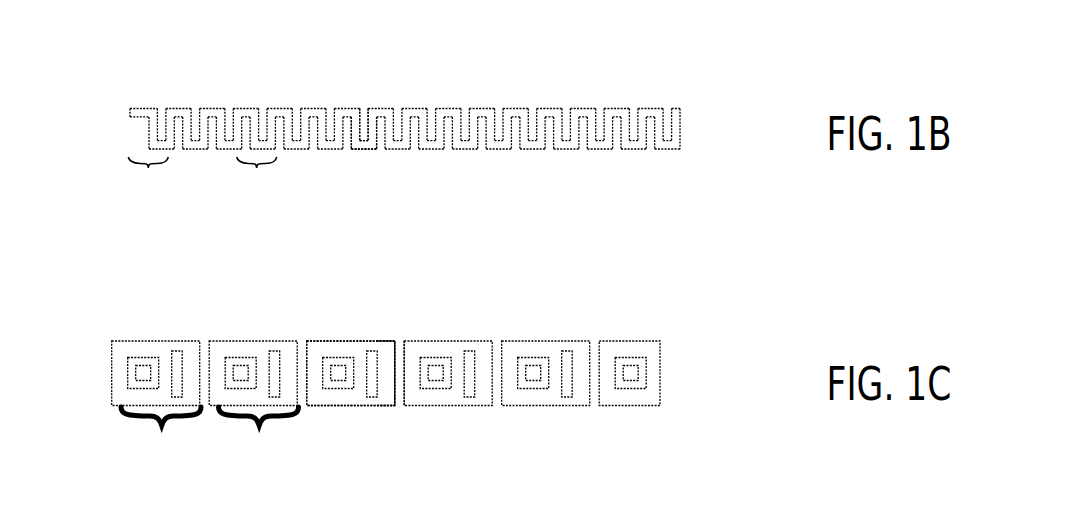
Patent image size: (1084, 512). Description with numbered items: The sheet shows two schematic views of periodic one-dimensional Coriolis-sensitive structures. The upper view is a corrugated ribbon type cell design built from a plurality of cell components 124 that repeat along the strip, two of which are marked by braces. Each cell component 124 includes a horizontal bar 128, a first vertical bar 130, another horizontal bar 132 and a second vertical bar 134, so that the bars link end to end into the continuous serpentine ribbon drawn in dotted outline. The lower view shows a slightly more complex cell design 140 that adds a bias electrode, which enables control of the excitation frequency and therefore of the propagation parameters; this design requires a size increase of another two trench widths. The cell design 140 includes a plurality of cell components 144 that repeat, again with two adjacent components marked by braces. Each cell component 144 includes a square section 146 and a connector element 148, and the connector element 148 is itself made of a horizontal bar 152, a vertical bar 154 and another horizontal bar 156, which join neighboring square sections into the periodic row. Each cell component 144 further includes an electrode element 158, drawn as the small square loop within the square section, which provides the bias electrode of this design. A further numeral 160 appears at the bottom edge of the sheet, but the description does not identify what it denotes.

In FIG. 1B, the cell component 124 is at (260, 168).
In FIG. 1B, the horizontal bar 128 is at (348, 108).
In FIG. 1B, the first vertical bar 130 is at (358, 122).
In FIG. 1B, the another horizontal bar 132 is at (367, 128).
In FIG. 1B, the second vertical bar 134 is at (365, 145).
In FIG. 1C, the cell design 140 is at (665, 260).
In FIG. 1C, the cell component 144 is at (263, 430).
In FIG. 1C, the square section 146 is at (333, 347).
In FIG. 1C, the connector element 148 is at (400, 413).
In FIG. 1C, the horizontal bar 152 is at (383, 340).
In FIG. 1C, the vertical bar 154 is at (392, 363).
In FIG. 1C, the another horizontal bar 156 is at (398, 407).
In FIG. 1C, the electrode element 158 is at (147, 367).
In FIG. 1C, the substrate 160 is at (820, 505).